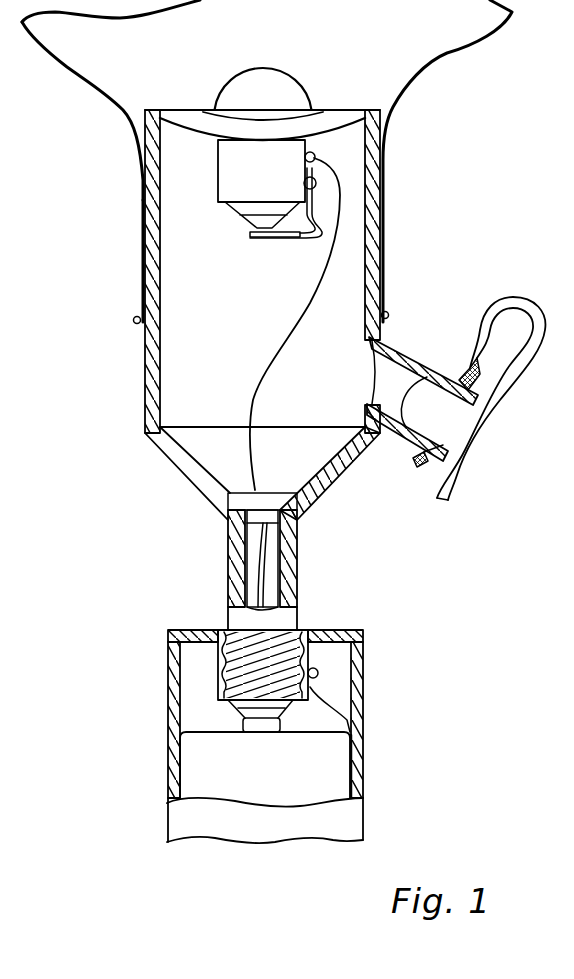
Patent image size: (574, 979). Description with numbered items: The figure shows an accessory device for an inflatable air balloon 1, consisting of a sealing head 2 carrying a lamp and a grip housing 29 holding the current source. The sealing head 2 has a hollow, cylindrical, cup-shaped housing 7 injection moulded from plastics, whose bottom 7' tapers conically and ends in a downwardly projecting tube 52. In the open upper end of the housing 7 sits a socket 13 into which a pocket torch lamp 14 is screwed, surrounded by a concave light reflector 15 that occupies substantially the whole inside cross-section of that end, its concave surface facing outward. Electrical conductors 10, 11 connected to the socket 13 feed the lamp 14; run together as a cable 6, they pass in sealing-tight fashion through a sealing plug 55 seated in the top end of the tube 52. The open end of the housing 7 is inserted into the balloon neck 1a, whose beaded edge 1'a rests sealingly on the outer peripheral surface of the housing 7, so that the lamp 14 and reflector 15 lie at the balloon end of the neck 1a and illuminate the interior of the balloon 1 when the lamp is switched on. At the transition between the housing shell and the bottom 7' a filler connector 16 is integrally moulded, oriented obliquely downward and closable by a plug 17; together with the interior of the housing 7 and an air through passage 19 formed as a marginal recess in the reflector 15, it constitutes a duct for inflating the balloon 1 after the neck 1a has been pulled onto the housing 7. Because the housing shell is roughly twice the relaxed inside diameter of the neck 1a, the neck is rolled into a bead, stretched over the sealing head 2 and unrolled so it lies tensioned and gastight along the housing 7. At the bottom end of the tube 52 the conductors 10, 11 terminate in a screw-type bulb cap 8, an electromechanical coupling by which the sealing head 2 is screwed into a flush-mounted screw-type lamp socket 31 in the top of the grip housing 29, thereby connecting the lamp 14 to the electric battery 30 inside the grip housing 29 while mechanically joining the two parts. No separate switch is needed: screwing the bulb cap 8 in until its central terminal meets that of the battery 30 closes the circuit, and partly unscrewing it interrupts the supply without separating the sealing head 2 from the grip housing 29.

The air balloon 1 is at (267, 161).
The balloon neck 1a is at (142, 222).
The beaded edge 1'a is at (104, 311).
The sealing head 2 is at (128, 372).
The cable 6 is at (238, 573).
The housing 7 is at (407, 271).
The housing bottom 7' is at (334, 476).
The screw-type bulb cap 8 is at (278, 648).
The electrical conductor 10 is at (320, 170).
The electrical conductor 11 is at (325, 230).
The socket 13 is at (232, 182).
The pocket torch lamp 14 is at (285, 78).
The concave light reflector 15 is at (338, 118).
The filler connector 16 is at (406, 352).
The plug 17 is at (452, 432).
The air through passage 19 is at (230, 118).
The grip housing 29 is at (345, 823).
The electric battery 30 is at (335, 770).
The screw-type lamp socket 31 is at (310, 652).
The tube 52 is at (278, 573).
The sealing plug 55 is at (250, 500).